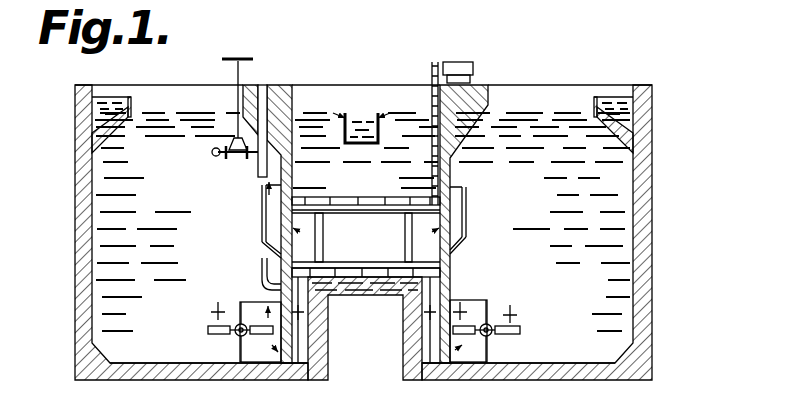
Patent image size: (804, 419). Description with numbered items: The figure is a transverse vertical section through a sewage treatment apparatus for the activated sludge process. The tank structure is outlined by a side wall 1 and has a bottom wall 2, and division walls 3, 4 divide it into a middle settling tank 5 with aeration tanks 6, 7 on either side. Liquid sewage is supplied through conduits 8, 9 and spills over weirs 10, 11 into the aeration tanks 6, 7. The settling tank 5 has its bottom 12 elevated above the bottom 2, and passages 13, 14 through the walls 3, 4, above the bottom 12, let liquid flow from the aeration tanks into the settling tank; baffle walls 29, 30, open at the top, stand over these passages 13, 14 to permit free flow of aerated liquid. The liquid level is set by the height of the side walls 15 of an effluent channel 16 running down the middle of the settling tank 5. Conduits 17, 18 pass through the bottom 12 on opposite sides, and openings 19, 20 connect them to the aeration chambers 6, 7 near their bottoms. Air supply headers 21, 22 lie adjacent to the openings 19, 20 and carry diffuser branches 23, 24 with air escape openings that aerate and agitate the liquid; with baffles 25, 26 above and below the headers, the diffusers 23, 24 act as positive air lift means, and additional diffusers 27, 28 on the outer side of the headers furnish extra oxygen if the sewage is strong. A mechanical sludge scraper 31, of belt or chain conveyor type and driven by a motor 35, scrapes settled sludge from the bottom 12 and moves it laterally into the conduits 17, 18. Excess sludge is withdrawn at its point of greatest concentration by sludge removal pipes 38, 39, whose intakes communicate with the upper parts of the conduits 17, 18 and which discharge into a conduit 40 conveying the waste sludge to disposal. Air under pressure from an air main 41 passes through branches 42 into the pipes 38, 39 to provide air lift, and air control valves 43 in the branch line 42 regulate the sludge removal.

The side wall 1 is at (73, 205).
The bottom wall 2 is at (156, 377).
The division wall 3 is at (286, 90).
The division wall 4 is at (466, 96).
The settling tank 5 is at (313, 125).
The aeration tank 6 is at (170, 125).
The aeration tank 7 is at (540, 125).
The conduit 8 is at (96, 101).
The conduit 9 is at (628, 100).
The weir 10 is at (127, 96).
The weir 11 is at (588, 98).
The bottom of settling tank 12 is at (357, 282).
The passage 13 is at (308, 237).
The passage 14 is at (422, 237).
The side walls of effluent channel 15 is at (356, 130).
The effluent channel 16 is at (374, 121).
The conduit 17 is at (302, 346).
The conduit 18 is at (423, 349).
The opening 19 is at (264, 363).
The opening 20 is at (436, 366).
The air supply header 21 is at (239, 334).
The air supply header 22 is at (488, 340).
The diffuser branch 23 is at (253, 302).
The diffuser branch 24 is at (460, 319).
The baffle 25 is at (498, 310).
The baffle 26 is at (500, 363).
The diffuser 27 is at (207, 332).
The diffuser 28 is at (521, 330).
The baffle wall 29 is at (262, 213).
The baffle wall 30 is at (468, 210).
The mechanical sludge scraper 31 is at (336, 205).
The motor 35 is at (458, 66).
The sludge removal pipe 38 is at (262, 272).
The sludge removal pipe 39 is at (262, 256).
The conduit 40 is at (264, 82).
The air main 41 is at (212, 152).
The air branch 42 is at (228, 156).
The air control valve 43 is at (244, 158).